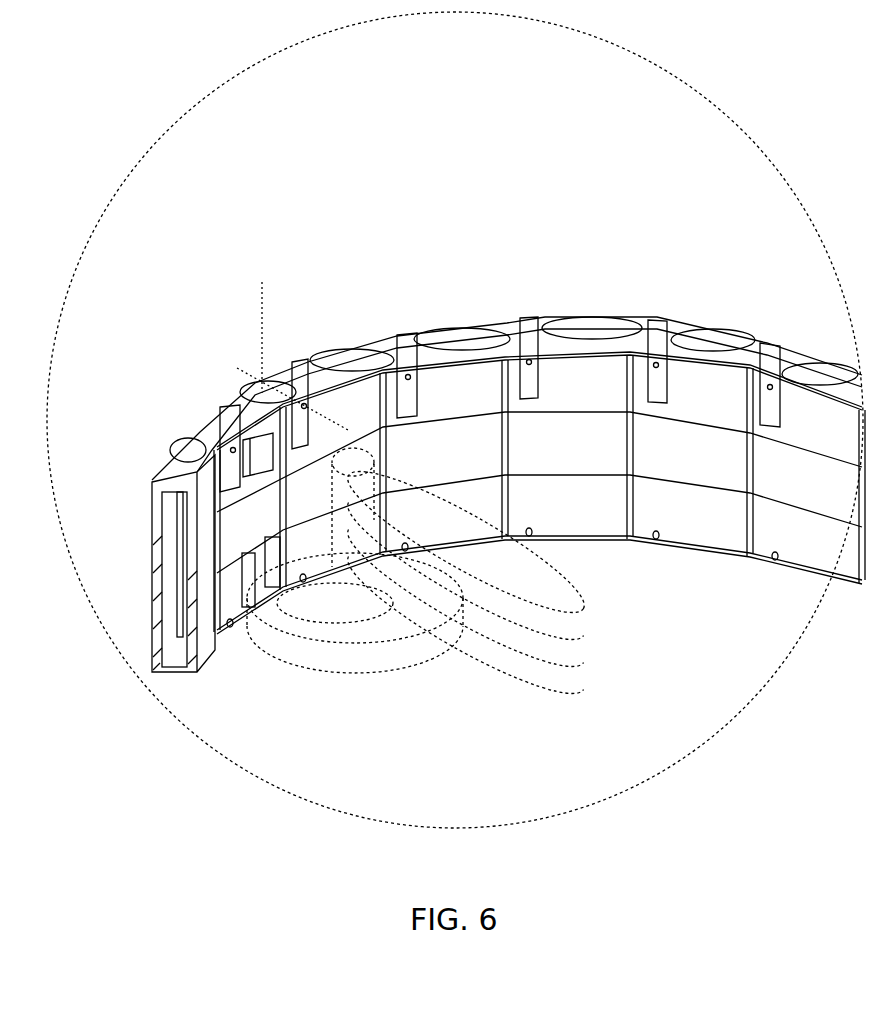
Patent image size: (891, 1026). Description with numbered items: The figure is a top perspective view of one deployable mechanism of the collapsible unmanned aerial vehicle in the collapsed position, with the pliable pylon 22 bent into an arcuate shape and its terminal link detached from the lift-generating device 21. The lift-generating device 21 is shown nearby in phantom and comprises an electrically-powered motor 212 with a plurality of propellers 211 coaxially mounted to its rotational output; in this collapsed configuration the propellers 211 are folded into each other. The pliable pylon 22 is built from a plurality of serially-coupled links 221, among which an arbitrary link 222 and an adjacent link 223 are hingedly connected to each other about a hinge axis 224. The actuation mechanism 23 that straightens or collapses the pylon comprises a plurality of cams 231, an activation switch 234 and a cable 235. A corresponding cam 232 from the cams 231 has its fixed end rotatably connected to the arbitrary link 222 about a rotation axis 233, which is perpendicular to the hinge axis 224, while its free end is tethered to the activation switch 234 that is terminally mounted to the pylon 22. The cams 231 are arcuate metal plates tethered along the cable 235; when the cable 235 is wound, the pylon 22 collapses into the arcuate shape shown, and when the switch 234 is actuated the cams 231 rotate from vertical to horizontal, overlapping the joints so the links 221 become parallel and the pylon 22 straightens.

The lift-generating device 21 is at (582, 577).
The plurality of propellers 211 is at (462, 682).
The electrically-powered motor 212 is at (352, 670).
The pliable pylon 22 is at (442, 228).
The plurality of serially-coupled links 221 is at (713, 523).
The arbitrary link 222 is at (715, 350).
The adjacent link 223 is at (590, 334).
The hinge axis 224 is at (262, 290).
The actuation mechanism 23 is at (140, 552).
The plurality of cams 231 is at (409, 340).
The corresponding cam 232 is at (656, 325).
The rotation axis 233 is at (318, 422).
The activation switch 234 is at (249, 534).
The cable 235 is at (358, 346).